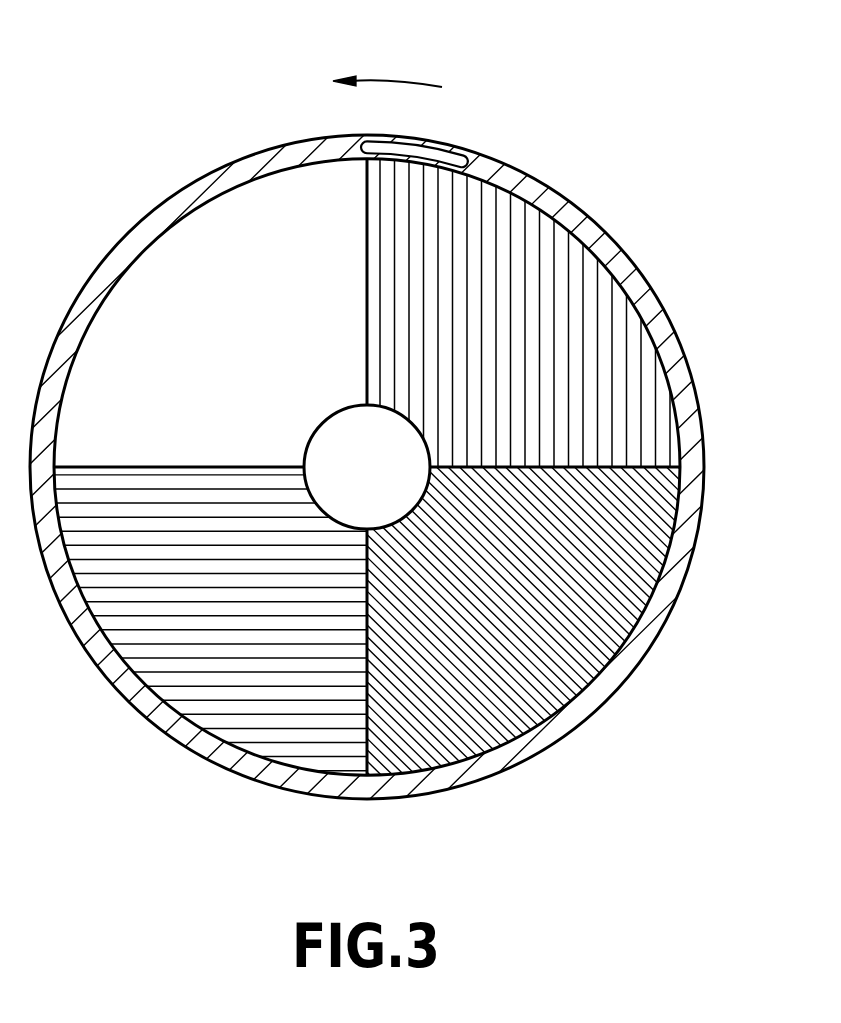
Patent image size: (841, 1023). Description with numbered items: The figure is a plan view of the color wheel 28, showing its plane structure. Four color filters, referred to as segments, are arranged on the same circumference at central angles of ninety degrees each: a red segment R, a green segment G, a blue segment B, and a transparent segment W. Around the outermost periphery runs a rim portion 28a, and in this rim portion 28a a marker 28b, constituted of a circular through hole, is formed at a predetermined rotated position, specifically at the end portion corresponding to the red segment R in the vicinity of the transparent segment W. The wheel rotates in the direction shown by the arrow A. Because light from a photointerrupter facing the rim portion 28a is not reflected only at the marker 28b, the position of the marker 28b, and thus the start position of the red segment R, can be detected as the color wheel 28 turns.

The color wheel 28 is at (420, 511).
The rim portion 28a is at (528, 170).
The marker 28b is at (447, 150).
The arrow A is at (398, 83).
The transparent segment W is at (188, 267).
The red segment R is at (618, 328).
The green segment G is at (565, 633).
The blue segment B is at (183, 680).